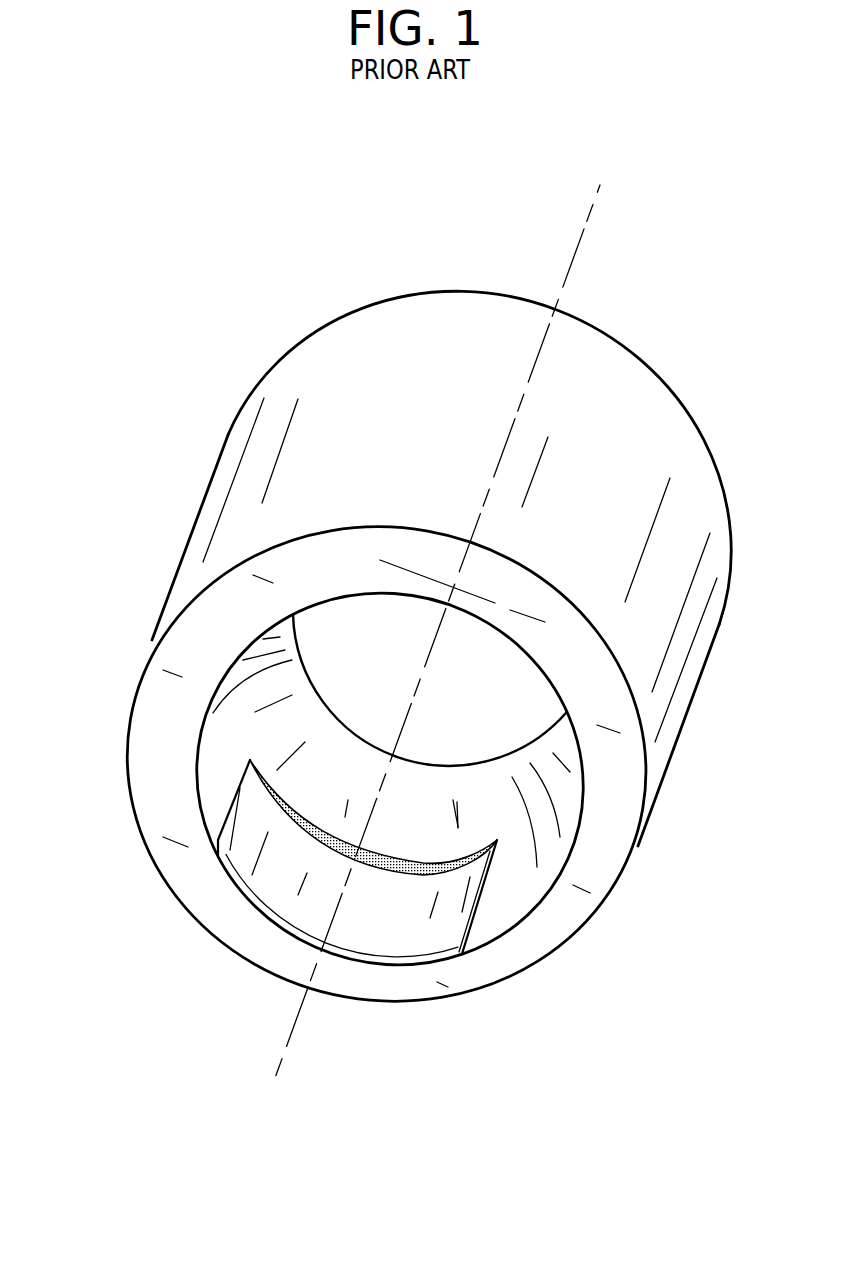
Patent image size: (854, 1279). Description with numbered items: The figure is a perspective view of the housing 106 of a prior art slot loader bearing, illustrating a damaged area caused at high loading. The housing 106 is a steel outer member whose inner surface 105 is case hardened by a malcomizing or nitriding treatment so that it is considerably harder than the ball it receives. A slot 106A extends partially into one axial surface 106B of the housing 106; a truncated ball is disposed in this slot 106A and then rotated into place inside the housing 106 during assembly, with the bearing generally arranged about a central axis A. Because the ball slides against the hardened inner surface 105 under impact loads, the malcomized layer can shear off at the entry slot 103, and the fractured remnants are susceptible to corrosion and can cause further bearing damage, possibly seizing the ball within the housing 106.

The central axis A is at (601, 209).
The entry slot 103 is at (464, 840).
The inner surface 105 is at (254, 712).
The housing 106 is at (324, 288).
The slot 106A is at (393, 943).
The axial surface 106B is at (504, 958).